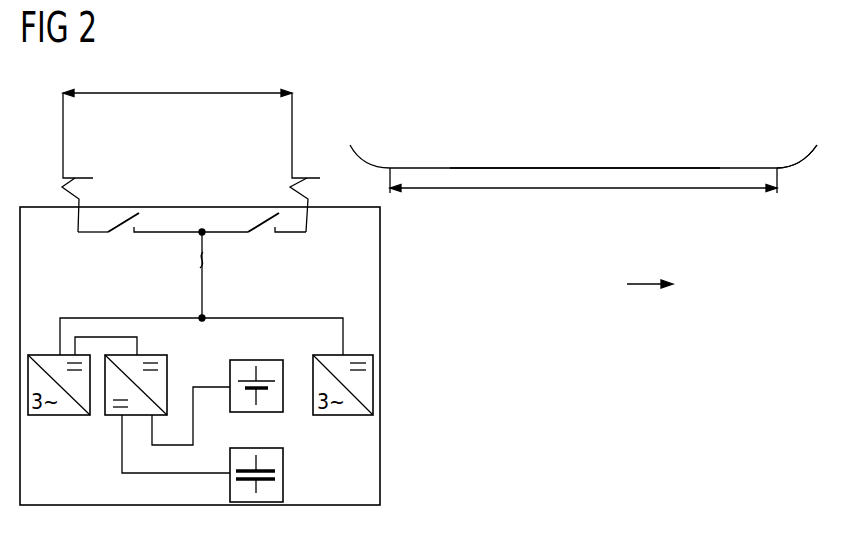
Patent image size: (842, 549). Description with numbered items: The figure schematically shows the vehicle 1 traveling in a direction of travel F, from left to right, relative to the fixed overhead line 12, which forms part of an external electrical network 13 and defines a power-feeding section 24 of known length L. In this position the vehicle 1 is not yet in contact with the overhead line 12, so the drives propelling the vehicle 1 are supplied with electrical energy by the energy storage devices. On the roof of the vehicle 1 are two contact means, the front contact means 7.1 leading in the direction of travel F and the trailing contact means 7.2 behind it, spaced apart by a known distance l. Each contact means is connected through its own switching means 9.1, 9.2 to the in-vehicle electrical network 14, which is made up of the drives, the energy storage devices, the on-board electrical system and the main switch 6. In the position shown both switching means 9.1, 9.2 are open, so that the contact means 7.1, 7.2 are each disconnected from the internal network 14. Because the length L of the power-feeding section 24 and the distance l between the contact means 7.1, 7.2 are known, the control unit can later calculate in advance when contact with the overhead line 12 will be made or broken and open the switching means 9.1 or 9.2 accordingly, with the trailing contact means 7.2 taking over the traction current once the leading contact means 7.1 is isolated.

The vehicle 1 is at (381, 290).
The distance between the two contact means l is at (179, 93).
The front contact means 7.1 is at (312, 178).
The trailing contact means 7.2 is at (87, 178).
The switching means 9.1 is at (263, 218).
The switching means 9.2 is at (127, 212).
The main switch 6 is at (200, 276).
The in-vehicle electrical network 14 is at (240, 302).
The overhead line 12 is at (460, 168).
The external electrical network 13 is at (589, 148).
The power-feeding section 24 is at (742, 128).
The length of the power-feeding section L is at (585, 190).
The direction of travel F is at (640, 283).